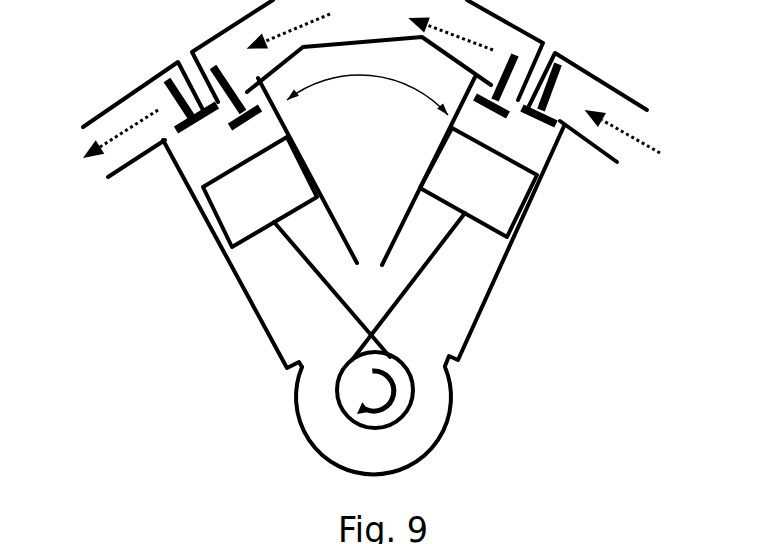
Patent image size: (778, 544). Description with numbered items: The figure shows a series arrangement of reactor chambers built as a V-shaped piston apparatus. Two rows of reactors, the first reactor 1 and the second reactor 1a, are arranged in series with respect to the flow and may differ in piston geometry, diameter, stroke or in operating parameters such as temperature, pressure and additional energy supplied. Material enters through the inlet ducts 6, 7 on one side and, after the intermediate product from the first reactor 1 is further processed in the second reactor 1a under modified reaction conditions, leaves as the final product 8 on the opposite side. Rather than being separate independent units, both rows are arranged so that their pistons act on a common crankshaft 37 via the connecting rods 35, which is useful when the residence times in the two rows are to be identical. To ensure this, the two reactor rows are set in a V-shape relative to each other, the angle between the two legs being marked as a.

The reactor 1 is at (478, 173).
The reactor 1a is at (260, 187).
The intake duct 6 is at (642, 154).
The intake duct 7 is at (642, 154).
The final product 8 is at (107, 160).
The connecting rods 35 is at (322, 272).
The common crankshaft 37 is at (410, 401).
The angle of the two legs a is at (367, 90).